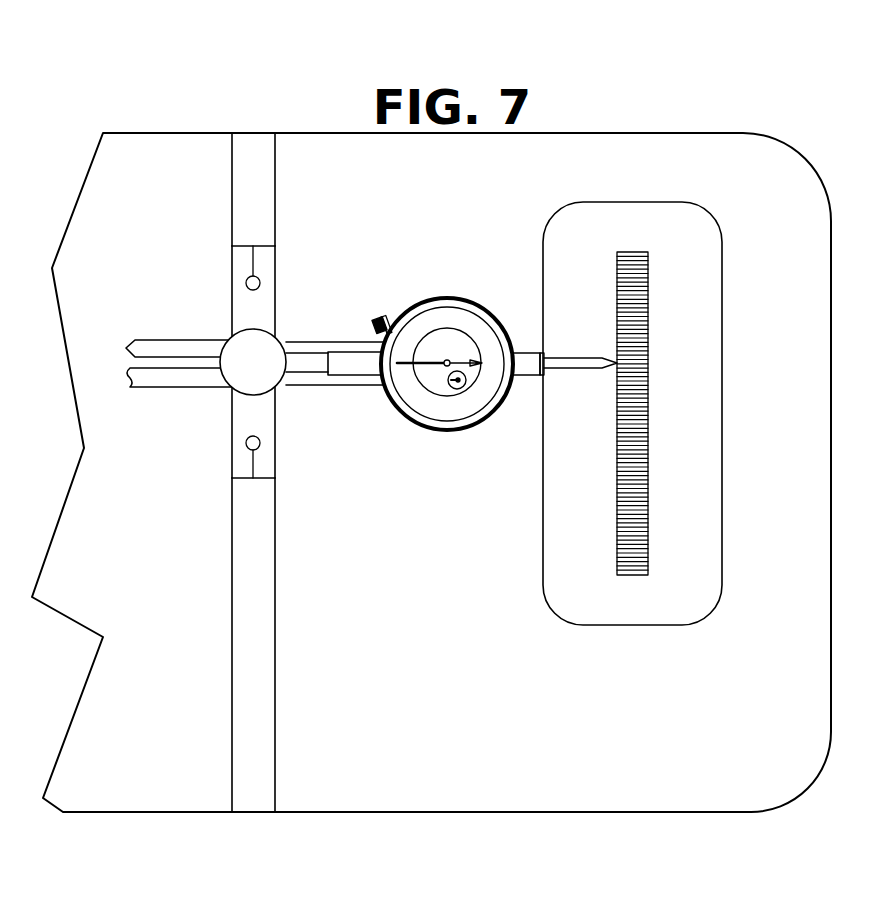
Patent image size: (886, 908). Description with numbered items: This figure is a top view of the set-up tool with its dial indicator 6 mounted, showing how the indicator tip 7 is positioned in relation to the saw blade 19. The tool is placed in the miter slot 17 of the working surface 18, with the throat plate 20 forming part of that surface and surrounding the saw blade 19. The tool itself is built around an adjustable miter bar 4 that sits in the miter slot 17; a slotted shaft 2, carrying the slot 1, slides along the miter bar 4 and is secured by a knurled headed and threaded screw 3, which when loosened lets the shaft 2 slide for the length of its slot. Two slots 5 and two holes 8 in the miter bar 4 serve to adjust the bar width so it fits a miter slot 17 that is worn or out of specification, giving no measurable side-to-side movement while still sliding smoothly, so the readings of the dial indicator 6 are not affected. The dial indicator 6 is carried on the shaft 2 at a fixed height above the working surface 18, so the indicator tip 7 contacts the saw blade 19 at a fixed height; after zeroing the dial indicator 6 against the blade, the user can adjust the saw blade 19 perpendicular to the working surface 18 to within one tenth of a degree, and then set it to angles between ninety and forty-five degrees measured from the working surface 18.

The slot 1 is at (137, 360).
The slotted shaft 2 is at (180, 350).
The knurled headed and threaded screw 3 is at (226, 392).
The adjustable miter bar 4 is at (230, 315).
The slot 5 is at (257, 253).
The dial indicator 6 is at (470, 425).
The indicator tip 7 is at (606, 355).
The hole 8 is at (262, 283).
The miter slot 17 is at (255, 740).
The working surface 18 is at (630, 705).
The saw blade 19 is at (618, 522).
The throat plate 20 is at (573, 271).